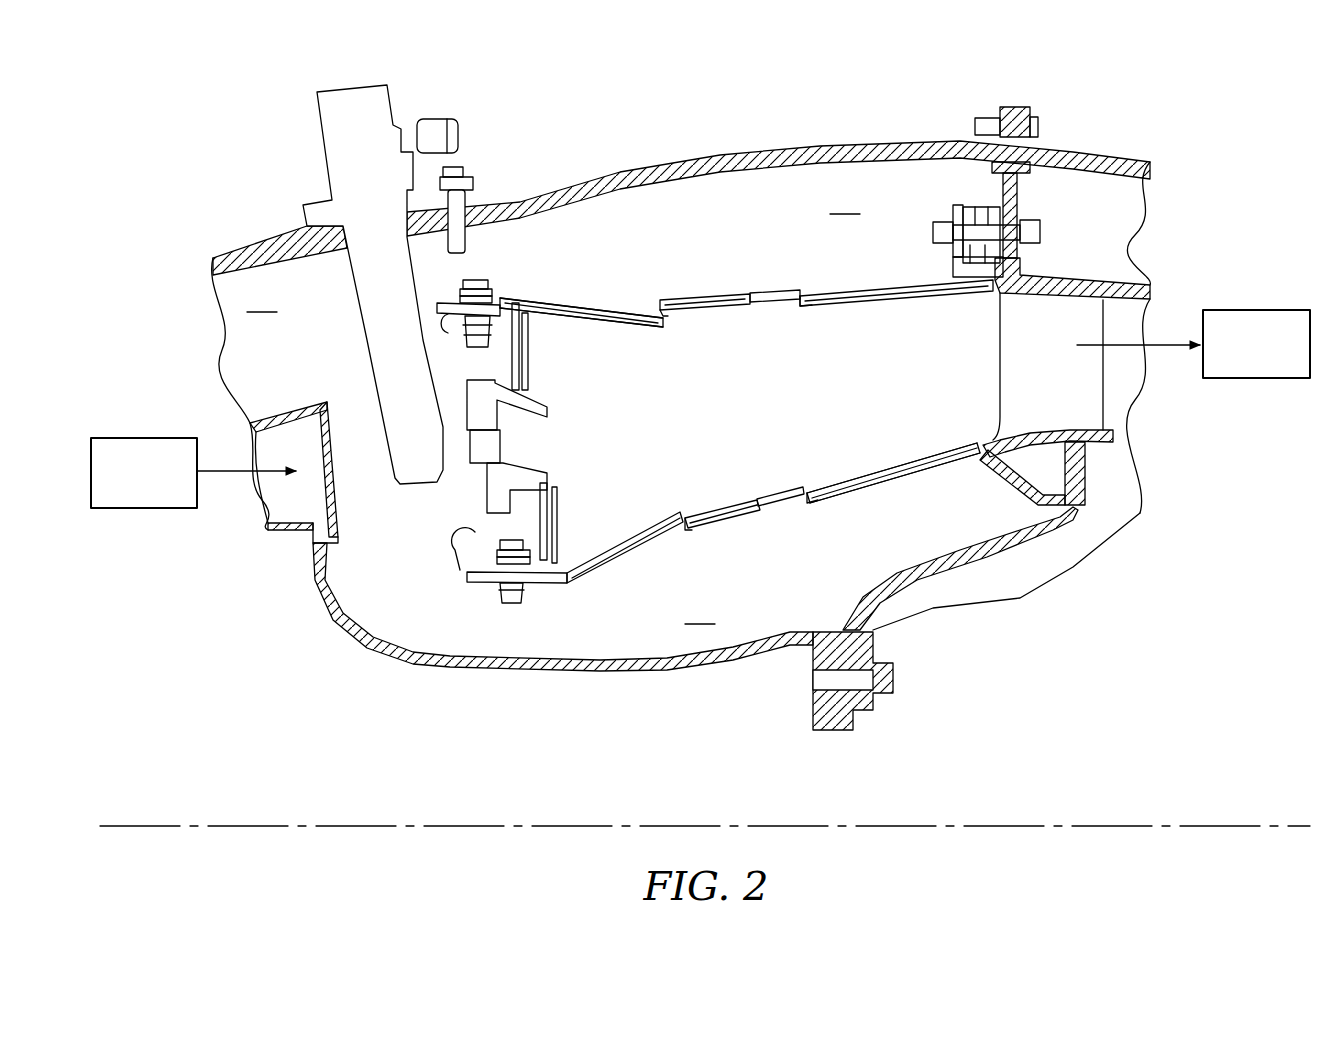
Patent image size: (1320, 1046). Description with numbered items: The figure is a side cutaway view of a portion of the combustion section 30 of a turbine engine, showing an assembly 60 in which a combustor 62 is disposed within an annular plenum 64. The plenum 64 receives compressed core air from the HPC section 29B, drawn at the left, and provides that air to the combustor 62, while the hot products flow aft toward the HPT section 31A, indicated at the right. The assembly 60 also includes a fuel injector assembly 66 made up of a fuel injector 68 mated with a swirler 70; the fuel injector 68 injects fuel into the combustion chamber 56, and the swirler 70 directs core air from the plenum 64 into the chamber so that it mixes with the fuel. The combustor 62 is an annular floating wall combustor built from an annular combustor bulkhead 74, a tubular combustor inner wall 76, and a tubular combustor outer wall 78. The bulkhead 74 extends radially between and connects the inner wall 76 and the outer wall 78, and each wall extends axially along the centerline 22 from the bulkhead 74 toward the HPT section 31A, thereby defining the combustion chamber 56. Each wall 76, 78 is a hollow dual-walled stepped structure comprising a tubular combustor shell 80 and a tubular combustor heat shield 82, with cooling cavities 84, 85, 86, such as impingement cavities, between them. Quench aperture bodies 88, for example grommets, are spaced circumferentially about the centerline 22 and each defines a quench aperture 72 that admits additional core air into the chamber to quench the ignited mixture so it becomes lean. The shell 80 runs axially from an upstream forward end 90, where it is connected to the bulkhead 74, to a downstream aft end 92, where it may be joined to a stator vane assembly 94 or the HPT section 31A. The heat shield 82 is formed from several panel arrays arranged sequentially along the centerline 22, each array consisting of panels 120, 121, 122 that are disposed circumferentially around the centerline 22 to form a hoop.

The centerline 22 is at (1078, 822).
The HPC section 29B is at (118, 485).
The combustion section 30 is at (592, 97).
The HPT section 31A is at (1232, 360).
The combustion chamber 56 is at (746, 414).
The assembly 60 is at (1163, 128).
The combustor 62 is at (700, 278).
The annular plenum 64 is at (681, 435).
The fuel injector assembly 66 is at (415, 497).
The fuel injector 68 is at (368, 345).
The swirler 70 is at (537, 453).
The quench aperture 72 is at (784, 293).
The combustor bulkhead 74 is at (532, 583).
The combustor inner wall 76 is at (885, 488).
The combustor outer wall 78 is at (887, 274).
The combustor shell 80 is at (557, 290).
The combustor heat shield 82 is at (592, 328).
The cooling cavity 84 is at (618, 318).
The cooling cavity 85 is at (713, 317).
The cooling cavity 86 is at (905, 300).
The quench aperture body 88 is at (760, 302).
The forward end 90 is at (447, 320).
The aft end 92 is at (1015, 280).
The stator vane assembly 94 is at (1035, 376).
The panel 120 is at (627, 333).
The panel 121 is at (690, 320).
The panel 122 is at (842, 302).